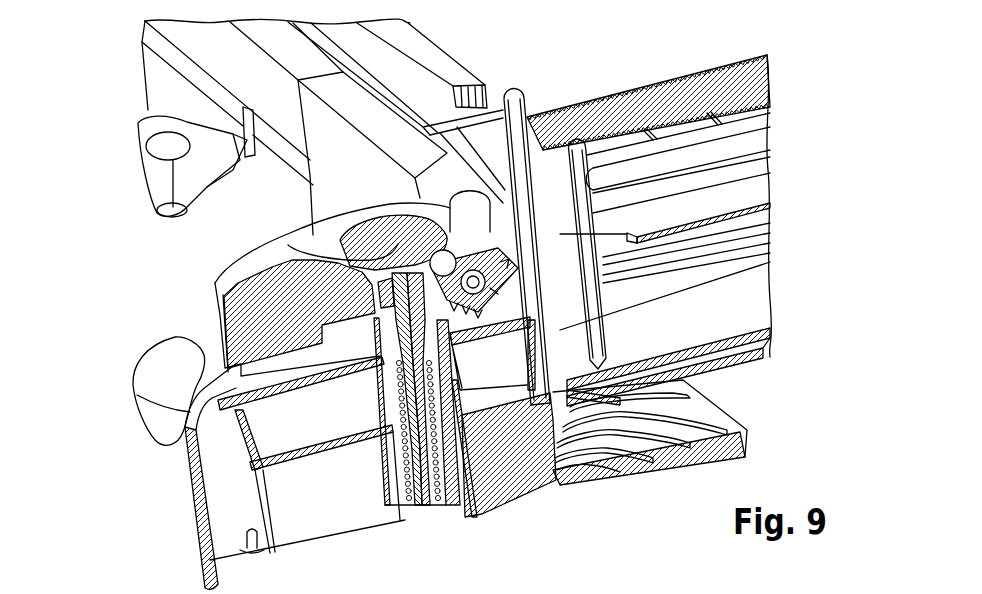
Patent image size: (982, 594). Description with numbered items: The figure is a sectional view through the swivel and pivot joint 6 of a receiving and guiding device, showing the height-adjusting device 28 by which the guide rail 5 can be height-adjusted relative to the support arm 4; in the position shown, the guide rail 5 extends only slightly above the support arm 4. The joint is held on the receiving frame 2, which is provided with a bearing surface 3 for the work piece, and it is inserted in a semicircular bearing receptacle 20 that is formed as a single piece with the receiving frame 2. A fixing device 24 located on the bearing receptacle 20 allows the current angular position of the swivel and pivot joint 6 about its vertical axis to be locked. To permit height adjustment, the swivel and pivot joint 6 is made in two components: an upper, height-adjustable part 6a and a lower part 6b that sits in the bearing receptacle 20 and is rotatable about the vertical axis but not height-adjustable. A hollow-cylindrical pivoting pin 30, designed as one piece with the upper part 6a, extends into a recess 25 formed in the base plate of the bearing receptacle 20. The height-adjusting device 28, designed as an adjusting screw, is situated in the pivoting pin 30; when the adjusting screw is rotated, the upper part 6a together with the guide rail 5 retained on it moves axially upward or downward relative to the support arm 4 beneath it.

The receiving frame 2 is at (126, 198).
The bearing surface 3 is at (430, 58).
The support arm 4 is at (745, 307).
The guide rail 5 is at (750, 77).
The swivel and pivot joint 6 is at (397, 398).
The upper part 6a is at (288, 248).
The lower part 6b is at (237, 383).
The bearing receptacle 20 is at (197, 505).
The fixing device 24 is at (147, 397).
The recess 25 is at (464, 519).
The height-adjusting device 28 is at (300, 262).
The pivoting pin 30 is at (388, 333).